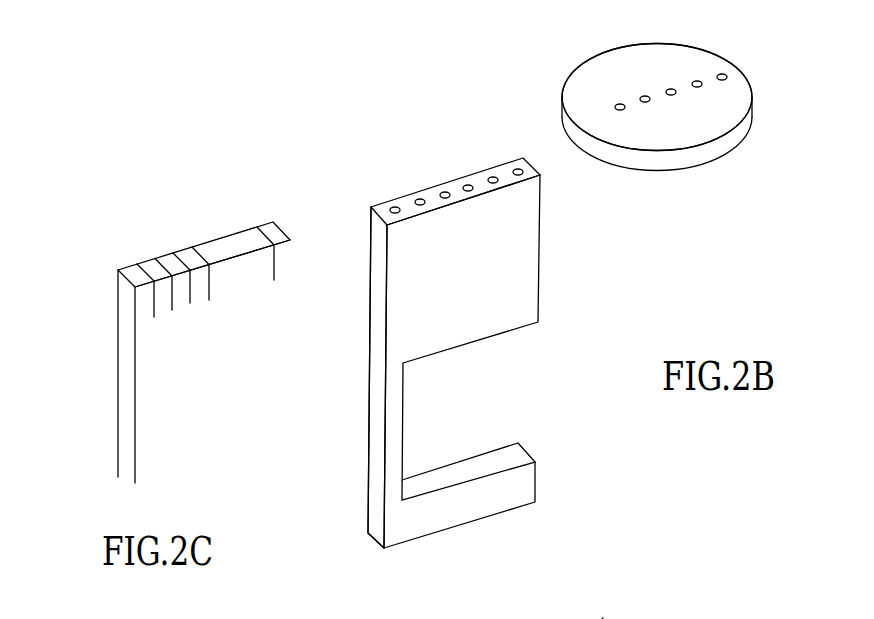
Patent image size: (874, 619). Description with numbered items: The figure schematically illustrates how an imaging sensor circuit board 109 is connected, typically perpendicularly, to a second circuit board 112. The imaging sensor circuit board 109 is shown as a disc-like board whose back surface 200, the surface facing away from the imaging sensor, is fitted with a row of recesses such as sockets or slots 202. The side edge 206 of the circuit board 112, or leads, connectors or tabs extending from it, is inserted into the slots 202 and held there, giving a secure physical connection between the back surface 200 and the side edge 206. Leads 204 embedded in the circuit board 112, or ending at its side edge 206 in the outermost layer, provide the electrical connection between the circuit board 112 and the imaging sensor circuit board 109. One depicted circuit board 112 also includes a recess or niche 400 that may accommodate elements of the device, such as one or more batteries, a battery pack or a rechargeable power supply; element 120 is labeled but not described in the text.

In FIG. 2B, the imaging sensor circuit board 109 is at (729, 42).
In FIG. 2B, the back surface 200 is at (608, 60).
In FIG. 2B, the slot 202 is at (650, 101).
In FIG. 2C, the leads 204 is at (205, 242).
In FIG. 2B, the leads 204 is at (465, 185).
In FIG. 2C, the side edge 206 is at (238, 265).
In FIG. 2B, the side edge 206 is at (498, 193).
In FIG. 2C, the circuit board 112 is at (148, 386).
In FIG. 2B, the circuit board 112 is at (398, 323).
In FIG. 2B, the recess 400 is at (495, 395).
In FIG. 2B, the base member 120 is at (602, 618).